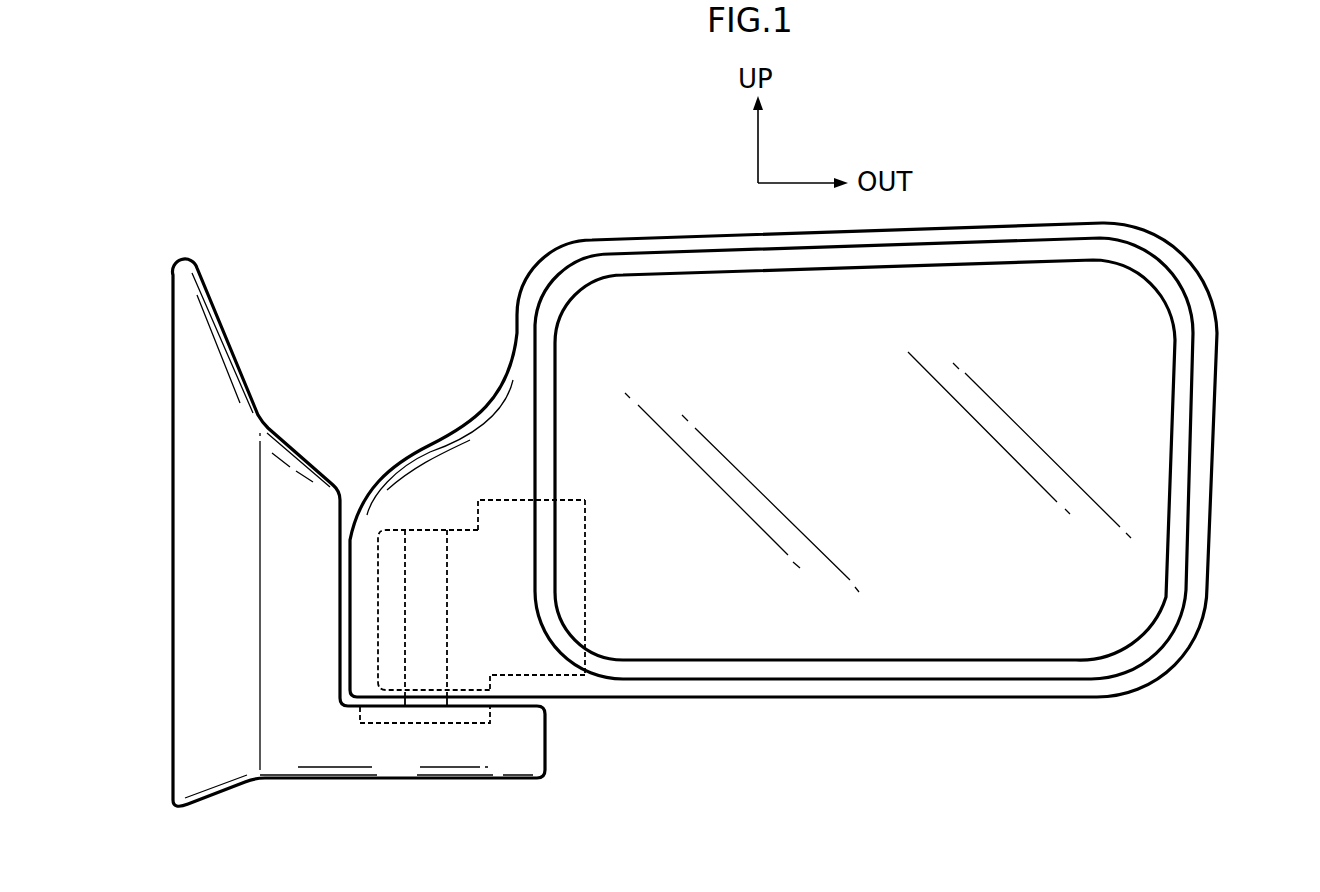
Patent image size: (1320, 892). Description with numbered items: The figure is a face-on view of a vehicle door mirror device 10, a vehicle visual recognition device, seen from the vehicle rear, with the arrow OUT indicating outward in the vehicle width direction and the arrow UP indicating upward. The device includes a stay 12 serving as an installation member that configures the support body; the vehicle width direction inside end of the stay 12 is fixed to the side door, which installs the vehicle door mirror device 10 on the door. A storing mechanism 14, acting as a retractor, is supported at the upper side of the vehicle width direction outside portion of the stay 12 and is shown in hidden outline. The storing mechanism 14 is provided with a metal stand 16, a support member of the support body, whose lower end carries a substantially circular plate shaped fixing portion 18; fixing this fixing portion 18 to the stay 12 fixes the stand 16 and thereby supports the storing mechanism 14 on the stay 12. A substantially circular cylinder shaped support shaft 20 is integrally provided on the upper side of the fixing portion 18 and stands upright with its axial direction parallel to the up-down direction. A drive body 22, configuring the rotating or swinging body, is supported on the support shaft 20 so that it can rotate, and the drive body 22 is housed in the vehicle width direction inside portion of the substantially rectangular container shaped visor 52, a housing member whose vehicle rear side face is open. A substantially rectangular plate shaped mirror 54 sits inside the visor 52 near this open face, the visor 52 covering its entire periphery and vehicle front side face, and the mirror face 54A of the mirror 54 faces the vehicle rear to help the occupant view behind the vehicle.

The vehicle door mirror device 10 is at (387, 258).
The stay 12 is at (247, 378).
The storing mechanism 14 is at (588, 528).
The stand 16 is at (405, 605).
The fixing portion 18 is at (435, 723).
The support shaft 20 is at (447, 630).
The drive body 22 is at (588, 590).
The visor 52 is at (1210, 462).
The mirror 54 is at (1145, 560).
The mirror face 54A is at (977, 625).